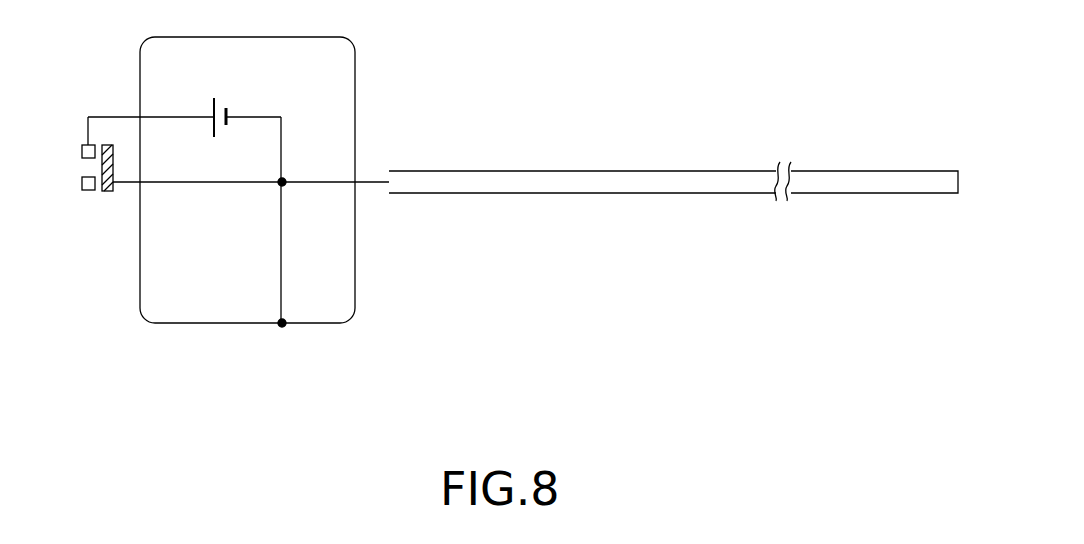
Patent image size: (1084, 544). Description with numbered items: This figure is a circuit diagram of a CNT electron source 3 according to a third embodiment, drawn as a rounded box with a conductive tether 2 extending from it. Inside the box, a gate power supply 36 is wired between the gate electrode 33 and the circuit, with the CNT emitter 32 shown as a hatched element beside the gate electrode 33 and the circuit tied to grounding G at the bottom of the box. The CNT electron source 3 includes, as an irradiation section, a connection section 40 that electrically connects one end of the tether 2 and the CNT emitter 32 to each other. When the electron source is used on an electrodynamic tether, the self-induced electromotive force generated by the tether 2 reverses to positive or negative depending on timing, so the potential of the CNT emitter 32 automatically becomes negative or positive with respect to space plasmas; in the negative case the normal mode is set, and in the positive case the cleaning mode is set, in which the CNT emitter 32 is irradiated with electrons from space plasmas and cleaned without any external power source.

The tether 2 is at (630, 171).
The CNT electron source 3 is at (378, 100).
The CNT emitter 32 is at (108, 191).
The gate electrode 33 is at (88, 191).
The gate power supply 36 is at (222, 98).
The connection section 40 is at (304, 180).
The grounding G is at (214, 323).